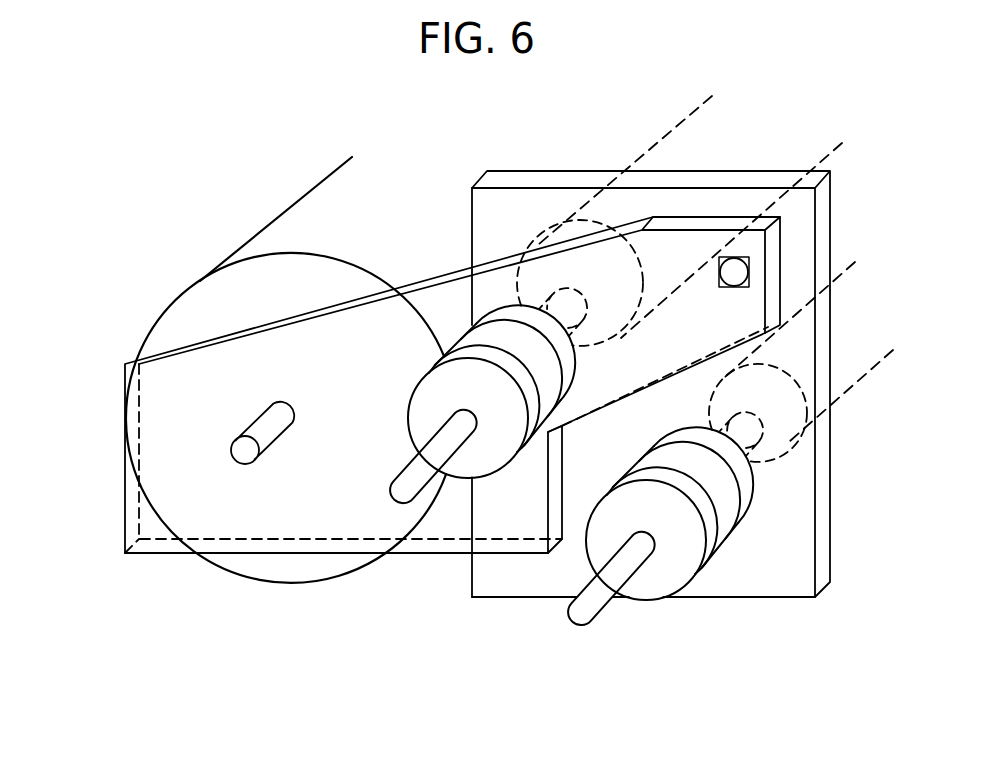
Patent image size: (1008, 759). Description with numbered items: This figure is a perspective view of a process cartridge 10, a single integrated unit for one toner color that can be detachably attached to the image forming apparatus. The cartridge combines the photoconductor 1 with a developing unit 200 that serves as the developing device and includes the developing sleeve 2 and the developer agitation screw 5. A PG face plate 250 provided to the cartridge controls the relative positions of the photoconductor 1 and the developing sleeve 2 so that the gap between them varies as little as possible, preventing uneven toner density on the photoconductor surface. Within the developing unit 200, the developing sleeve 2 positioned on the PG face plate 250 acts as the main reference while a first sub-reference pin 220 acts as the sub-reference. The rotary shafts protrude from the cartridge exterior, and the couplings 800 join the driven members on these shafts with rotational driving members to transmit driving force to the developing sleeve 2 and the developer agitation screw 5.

The process cartridge 10 is at (136, 175).
The photoconductor 1 is at (294, 207).
The developing sleeve 2 is at (666, 133).
The developer agitation screw 5 is at (858, 373).
The developing unit 200 is at (706, 600).
The first sub-reference pin 220 is at (731, 288).
The PG face plate 250 is at (125, 492).
The coupling 800 is at (586, 507).